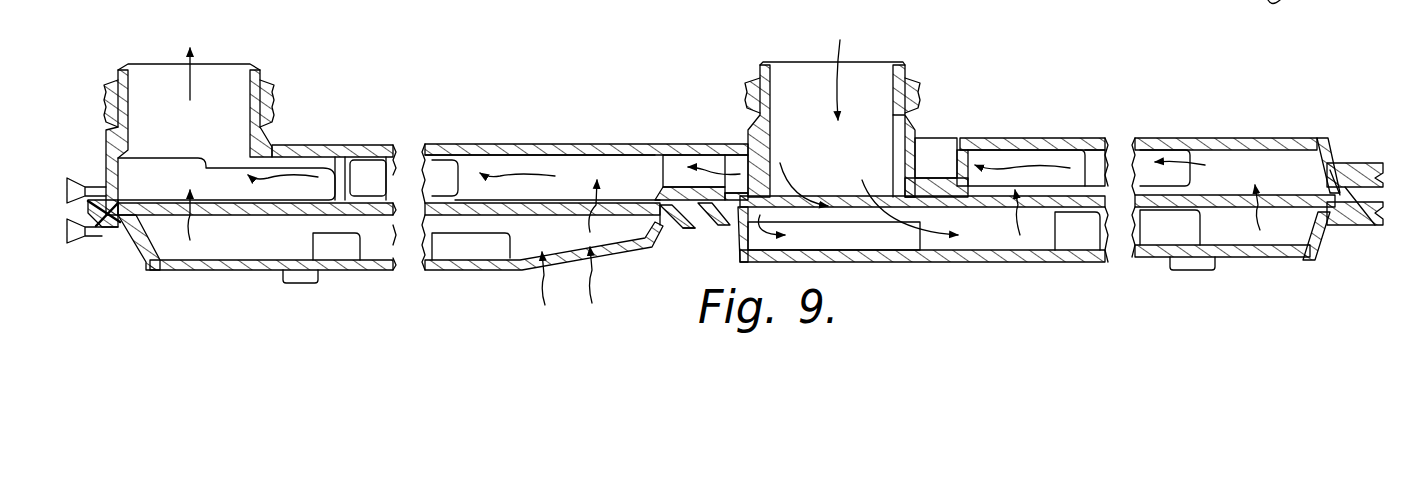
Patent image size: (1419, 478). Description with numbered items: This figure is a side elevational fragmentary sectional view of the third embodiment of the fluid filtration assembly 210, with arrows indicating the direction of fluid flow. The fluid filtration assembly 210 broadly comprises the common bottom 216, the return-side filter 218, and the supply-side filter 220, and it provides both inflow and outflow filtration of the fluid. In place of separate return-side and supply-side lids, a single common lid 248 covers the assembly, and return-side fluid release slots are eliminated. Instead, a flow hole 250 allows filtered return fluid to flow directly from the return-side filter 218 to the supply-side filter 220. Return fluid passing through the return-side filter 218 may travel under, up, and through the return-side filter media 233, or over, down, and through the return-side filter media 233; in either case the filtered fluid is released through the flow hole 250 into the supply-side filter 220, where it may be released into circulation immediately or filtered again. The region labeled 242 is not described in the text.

The fluid filtration assembly 210 is at (1112, 78).
The common bottom 216 is at (690, 228).
The return-side filter 218 is at (928, 40).
The supply-side filter 220 is at (648, 70).
The return-side filter media 233 is at (1290, 185).
The chamber 242 is at (267, 210).
The common lid 248 is at (545, 143).
The flow hole 250 is at (683, 166).